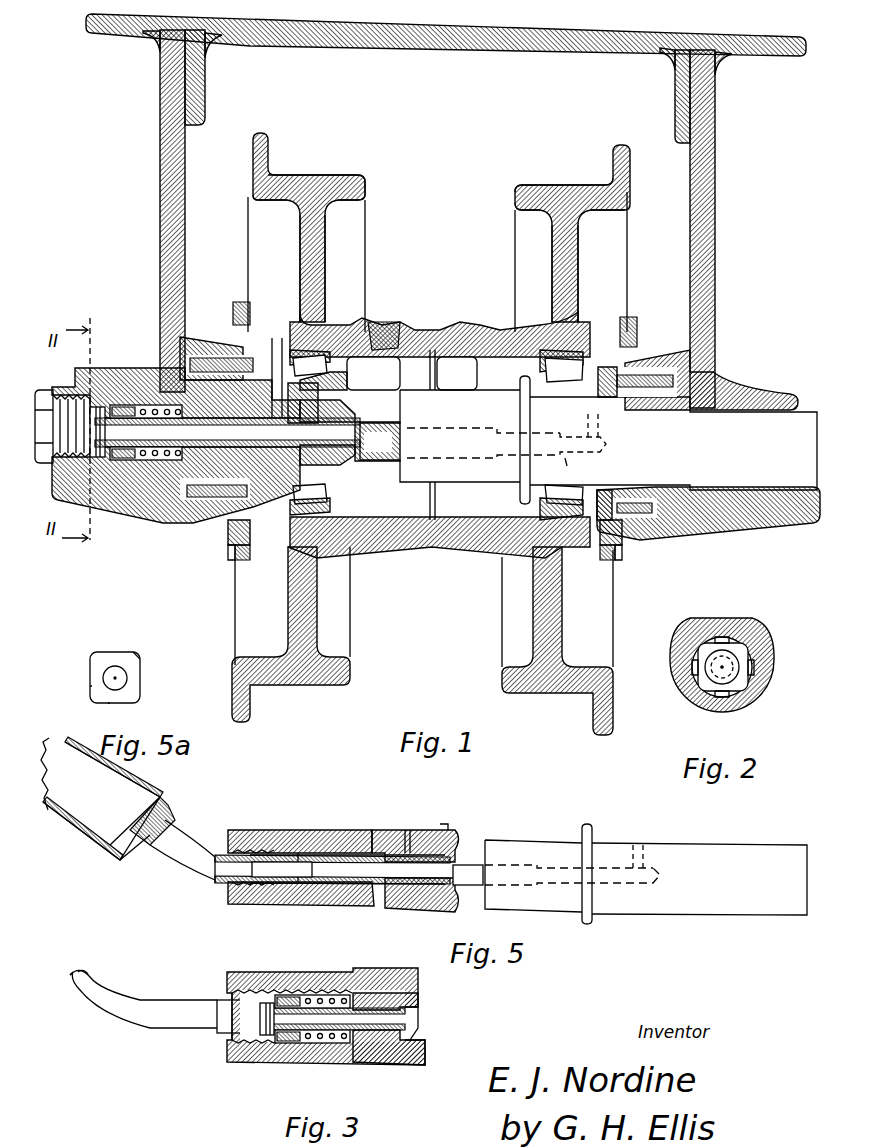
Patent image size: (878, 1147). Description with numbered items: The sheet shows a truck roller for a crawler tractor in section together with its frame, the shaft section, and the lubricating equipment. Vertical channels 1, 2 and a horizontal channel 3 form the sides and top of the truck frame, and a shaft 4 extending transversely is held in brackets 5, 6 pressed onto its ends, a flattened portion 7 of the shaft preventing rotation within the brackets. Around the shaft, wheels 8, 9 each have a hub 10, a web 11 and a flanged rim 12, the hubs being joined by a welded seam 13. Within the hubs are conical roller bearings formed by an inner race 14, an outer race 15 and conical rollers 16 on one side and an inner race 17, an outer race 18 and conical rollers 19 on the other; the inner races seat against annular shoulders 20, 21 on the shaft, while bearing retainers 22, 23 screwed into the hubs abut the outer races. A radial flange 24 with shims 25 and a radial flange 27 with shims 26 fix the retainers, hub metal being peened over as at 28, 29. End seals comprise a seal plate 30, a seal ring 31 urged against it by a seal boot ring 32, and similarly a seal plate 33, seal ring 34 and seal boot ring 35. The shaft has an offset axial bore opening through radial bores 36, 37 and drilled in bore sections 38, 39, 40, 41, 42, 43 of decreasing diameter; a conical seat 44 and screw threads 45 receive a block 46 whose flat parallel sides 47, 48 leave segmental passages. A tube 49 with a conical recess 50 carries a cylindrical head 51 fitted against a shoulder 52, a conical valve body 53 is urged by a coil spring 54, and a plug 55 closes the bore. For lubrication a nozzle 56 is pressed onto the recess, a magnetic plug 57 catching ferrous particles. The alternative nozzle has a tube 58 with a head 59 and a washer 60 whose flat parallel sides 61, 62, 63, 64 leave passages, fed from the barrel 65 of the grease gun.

In FIG. 1, the channel 1 is at (163, 184).
In FIG. 1, the channel 2 is at (716, 190).
In FIG. 1, the channel 3 is at (475, 40).
In FIG. 1, the shaft 4 is at (588, 439).
In FIG. 2, the shaft 4 is at (770, 632).
In FIG. 5, the shaft 4 is at (630, 864).
In FIG. 3, the shaft 4 is at (403, 993).
In FIG. 1, the bracket 5 is at (138, 512).
In FIG. 1, the bracket 6 is at (740, 530).
In FIG. 1, the flattened portion 7 is at (730, 411).
In FIG. 2, the flattened portion 7 is at (726, 622).
In FIG. 3, the flattened portion 7 is at (268, 975).
In FIG. 1, the wheel 8 is at (248, 241).
In FIG. 1, the wheel 9 is at (628, 247).
In FIG. 1, the hub 10 is at (426, 313).
In FIG. 1, the web 11 is at (325, 270).
In FIG. 1, the flanged rim 12 is at (330, 185).
In FIG. 1, the welded seam 13 is at (435, 540).
In FIG. 1, the inner race 14 is at (330, 498).
In FIG. 1, the outer race 15 is at (320, 358).
In FIG. 1, the conical rollers 16 is at (314, 507).
In FIG. 1, the inner race 17 is at (520, 500).
In FIG. 1, the outer race 18 is at (540, 356).
In FIG. 1, the conical rollers 19 is at (540, 512).
In FIG. 1, the annular shoulder 20 is at (345, 376).
In FIG. 5, the annular shoulder 20 is at (437, 836).
In FIG. 1, the annular shoulder 21 is at (527, 380).
In FIG. 5, the annular shoulder 21 is at (588, 830).
In FIG. 1, the bearing retainer 22 is at (236, 320).
In FIG. 1, the bearing retainer 23 is at (632, 345).
In FIG. 1, the radial flange 24 is at (228, 533).
In FIG. 1, the shims 25 is at (258, 553).
In FIG. 1, the shims 26 is at (606, 562).
In FIG. 1, the radial flange 27 is at (628, 543).
In FIG. 1, the peened-over metal 28 is at (228, 546).
In FIG. 1, the peened-over metal 29 is at (626, 558).
In FIG. 1, the seal plate 30 is at (249, 398).
In FIG. 1, the seal ring 31 is at (215, 478).
In FIG. 1, the seal boot ring 32 is at (222, 338).
In FIG. 1, the seal plate 33 is at (603, 388).
In FIG. 1, the seal ring 34 is at (628, 490).
In FIG. 1, the seal boot ring 35 is at (660, 390).
In FIG. 1, the radial bore 36 is at (301, 403).
In FIG. 1, the radial bore 37 is at (599, 431).
In FIG. 5, the radial bore 37 is at (643, 842).
In FIG. 1, the bore section 38 is at (156, 472).
In FIG. 5, the bore section 38 is at (278, 900).
In FIG. 3, the bore section 38 is at (330, 995).
In FIG. 1, the bore section 39 is at (281, 453).
In FIG. 5, the bore section 39 is at (362, 896).
In FIG. 1, the bore section 40 is at (397, 422).
In FIG. 5, the bore section 40 is at (403, 852).
In FIG. 1, the bore section 41 is at (457, 431).
In FIG. 5, the bore section 41 is at (505, 880).
In FIG. 1, the bore section 42 is at (556, 431).
In FIG. 5, the bore section 42 is at (560, 868).
In FIG. 1, the bore section 43 is at (571, 469).
In FIG. 5, the bore section 43 is at (630, 882).
In FIG. 1, the conical seat 44 is at (80, 470).
In FIG. 3, the conical seat 44 is at (227, 986).
In FIG. 1, the screw threads 45 is at (97, 407).
In FIG. 5, the screw threads 45 is at (256, 848).
In FIG. 3, the screw threads 45 is at (245, 995).
In FIG. 1, the block 46 is at (103, 410).
In FIG. 2, the block 46 is at (745, 695).
In FIG. 3, the block 46 is at (280, 1050).
In FIG. 2, the flat parallel sides 47 is at (670, 668).
In FIG. 2, the flat parallel sides 48 is at (710, 636).
In FIG. 1, the tube 49 is at (226, 452).
In FIG. 3, the tube 49 is at (418, 1036).
In FIG. 1, the conical recess 50 is at (120, 472).
In FIG. 3, the conical recess 50 is at (258, 1058).
In FIG. 1, the cylindrical head 51 is at (345, 413).
In FIG. 1, the shoulder 52 is at (376, 444).
In FIG. 1, the conical valve body 53 is at (186, 398).
In FIG. 3, the conical valve body 53 is at (368, 1050).
In FIG. 1, the coil spring 54 is at (150, 405).
In FIG. 3, the coil spring 54 is at (320, 1045).
In FIG. 1, the plug 55 is at (46, 394).
In FIG. 3, the nozzle 56 is at (220, 1033).
In FIG. 1, the magnetic plug 57 is at (385, 322).
In FIG. 5, the tube 58 is at (340, 889).
In FIG. 5, the head 59 is at (430, 900).
In FIG. 5A, the washer 60 is at (135, 681).
In FIG. 5, the washer 60 is at (298, 851).
In FIG. 5A, the flat parallel side 61 is at (140, 692).
In FIG. 5A, the flat parallel side 62 is at (90, 686).
In FIG. 5A, the flat parallel side 63 is at (108, 705).
In FIG. 5A, the flat parallel side 64 is at (125, 647).
In FIG. 5, the barrel 65 is at (68, 820).